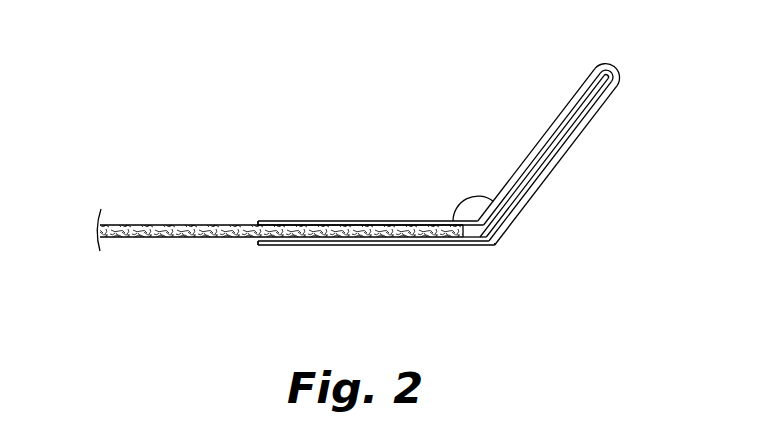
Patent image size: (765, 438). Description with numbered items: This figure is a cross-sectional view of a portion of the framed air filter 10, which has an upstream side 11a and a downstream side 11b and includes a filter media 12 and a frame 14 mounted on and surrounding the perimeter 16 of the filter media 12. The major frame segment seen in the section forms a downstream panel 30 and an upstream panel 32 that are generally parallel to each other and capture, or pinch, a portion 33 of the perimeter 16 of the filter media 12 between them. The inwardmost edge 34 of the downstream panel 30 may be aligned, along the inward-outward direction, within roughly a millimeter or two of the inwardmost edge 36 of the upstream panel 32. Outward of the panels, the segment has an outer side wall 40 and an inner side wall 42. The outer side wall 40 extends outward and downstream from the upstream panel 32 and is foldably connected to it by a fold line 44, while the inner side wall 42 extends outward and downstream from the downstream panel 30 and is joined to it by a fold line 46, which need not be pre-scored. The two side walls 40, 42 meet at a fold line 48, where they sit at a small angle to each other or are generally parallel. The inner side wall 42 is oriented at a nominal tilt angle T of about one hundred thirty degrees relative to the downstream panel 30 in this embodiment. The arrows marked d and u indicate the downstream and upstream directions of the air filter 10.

The framed air filter 10 is at (240, 97).
The upstream side 11a is at (545, 235).
The downstream side 11b is at (560, 69).
The filter media 12 is at (152, 223).
The frame 14 is at (574, 124).
The perimeter 16 is at (468, 245).
The downstream panel 30 is at (372, 220).
The upstream panel 32 is at (374, 245).
The portion of the perimeter 33 is at (415, 241).
The inwardmost edge of the downstream panel 34 is at (258, 220).
The inwardmost edge of the upstream panel 36 is at (258, 245).
The outer side wall 40 is at (549, 172).
The inner side wall 42 is at (548, 128).
The fold line 44 is at (494, 246).
The fold line 46 is at (463, 212).
The fold line 48 is at (617, 62).
The tilt angle T is at (483, 200).
The downward direction d is at (317, 104).
The upward direction u is at (317, 355).